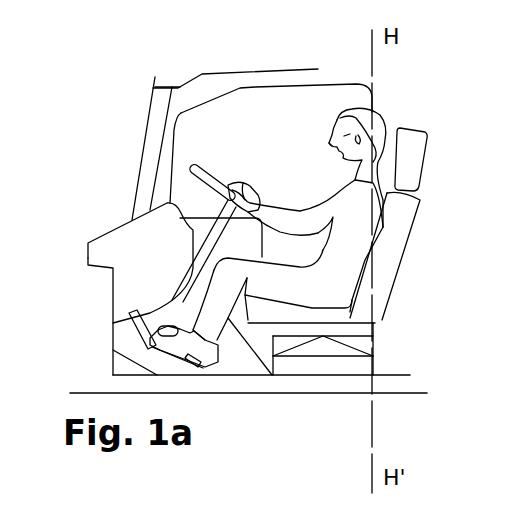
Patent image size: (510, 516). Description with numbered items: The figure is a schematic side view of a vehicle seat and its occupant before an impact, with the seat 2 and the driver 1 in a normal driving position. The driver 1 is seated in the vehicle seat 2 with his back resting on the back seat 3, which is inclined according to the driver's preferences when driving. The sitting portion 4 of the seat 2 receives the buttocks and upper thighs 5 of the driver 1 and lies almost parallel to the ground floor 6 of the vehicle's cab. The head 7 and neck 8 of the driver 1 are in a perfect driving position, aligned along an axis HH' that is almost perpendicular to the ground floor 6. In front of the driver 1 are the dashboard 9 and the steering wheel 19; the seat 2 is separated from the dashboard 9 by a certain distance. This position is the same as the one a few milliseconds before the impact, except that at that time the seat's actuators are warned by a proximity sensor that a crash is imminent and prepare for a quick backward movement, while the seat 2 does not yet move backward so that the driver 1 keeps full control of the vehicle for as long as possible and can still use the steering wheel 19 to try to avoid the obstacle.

The driver 1 is at (255, 108).
The steering wheel 19 is at (197, 152).
The dashboard 9 is at (111, 229).
The head 7 is at (352, 108).
The neck 8 is at (345, 171).
The vehicle seat 2 is at (441, 127).
The back seat 3 is at (393, 234).
The sitting portion 4 is at (310, 316).
The upper thighs 5 is at (247, 280).
The ground floor 6 is at (272, 395).